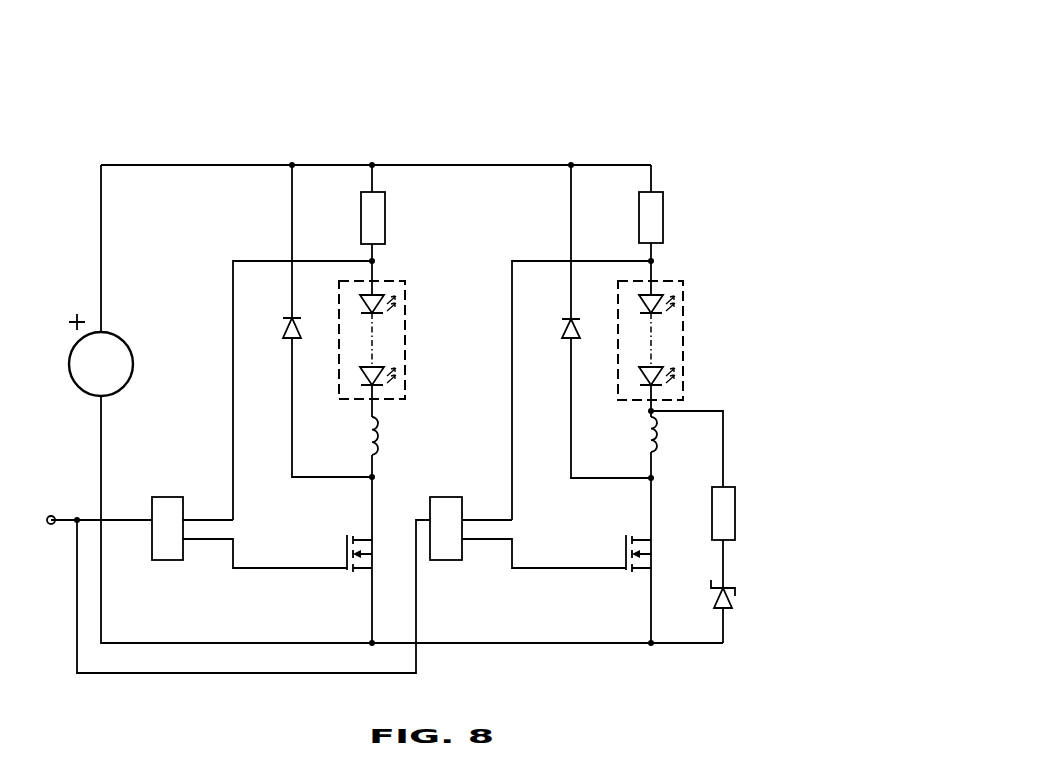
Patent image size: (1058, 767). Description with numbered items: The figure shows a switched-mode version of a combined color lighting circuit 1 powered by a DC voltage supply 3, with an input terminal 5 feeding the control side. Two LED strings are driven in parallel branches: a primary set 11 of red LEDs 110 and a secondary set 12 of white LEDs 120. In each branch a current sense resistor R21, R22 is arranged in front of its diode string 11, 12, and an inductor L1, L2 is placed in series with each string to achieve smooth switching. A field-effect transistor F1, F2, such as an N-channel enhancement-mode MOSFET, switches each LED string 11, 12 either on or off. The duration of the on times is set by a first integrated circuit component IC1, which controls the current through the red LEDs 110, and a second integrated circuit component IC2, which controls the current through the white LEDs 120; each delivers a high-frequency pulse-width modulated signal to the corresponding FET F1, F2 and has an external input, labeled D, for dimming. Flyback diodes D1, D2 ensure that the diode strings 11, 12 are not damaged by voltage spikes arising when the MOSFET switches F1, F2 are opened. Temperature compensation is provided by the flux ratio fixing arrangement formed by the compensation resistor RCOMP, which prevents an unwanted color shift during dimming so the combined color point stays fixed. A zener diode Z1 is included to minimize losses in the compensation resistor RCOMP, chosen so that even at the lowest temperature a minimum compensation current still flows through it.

The lighting circuit 1 is at (693, 118).
The DC voltage supply 3 is at (80, 390).
The input terminal 5 is at (50, 525).
The current sense resistor R22 is at (386, 210).
The current sense resistor R21 is at (664, 210).
The white LED 120 is at (376, 295).
The red LED 110 is at (655, 295).
The secondary set of white LEDs 12 is at (410, 325).
The primary set of red LEDs 11 is at (693, 326).
The flyback diode D2 is at (282, 328).
The flyback diode D1 is at (561, 328).
The inductor L2 is at (378, 422).
The inductor L1 is at (661, 430).
The field-effect transistor F2 is at (345, 546).
The field-effect transistor F1 is at (622, 553).
The second integrated circuit component IC2 is at (162, 561).
The first integrated circuit component IC1 is at (443, 561).
The compensation resistor RCOMP is at (736, 512).
The zener diode Z1 is at (736, 600).